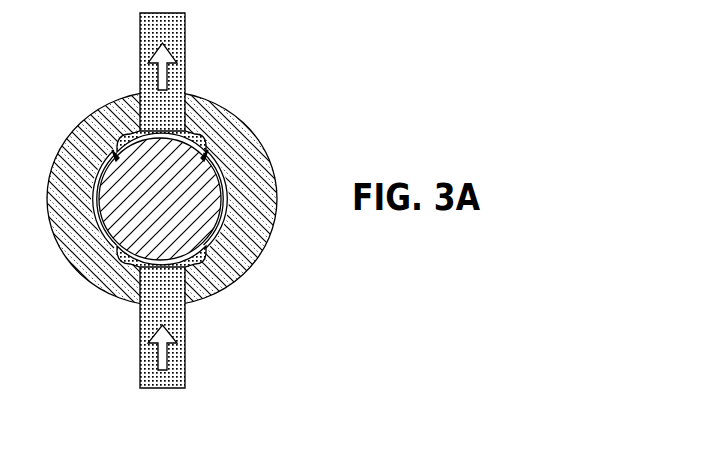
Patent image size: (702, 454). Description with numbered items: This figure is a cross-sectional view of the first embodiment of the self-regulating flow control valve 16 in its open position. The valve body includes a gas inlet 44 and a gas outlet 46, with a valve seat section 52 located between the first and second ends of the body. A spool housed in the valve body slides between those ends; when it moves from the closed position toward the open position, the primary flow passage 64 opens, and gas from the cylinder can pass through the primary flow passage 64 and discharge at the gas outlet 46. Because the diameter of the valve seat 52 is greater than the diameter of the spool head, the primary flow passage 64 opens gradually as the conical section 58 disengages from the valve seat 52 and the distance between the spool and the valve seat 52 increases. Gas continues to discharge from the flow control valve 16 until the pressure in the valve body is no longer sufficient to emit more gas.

The flow control valve 16 is at (300, 61).
The gas inlet 44 is at (176, 350).
The gas outlet 46 is at (176, 39).
The valve seat section 52 is at (192, 143).
The conical section 58 is at (207, 170).
The primary flow passage 64 is at (226, 206).